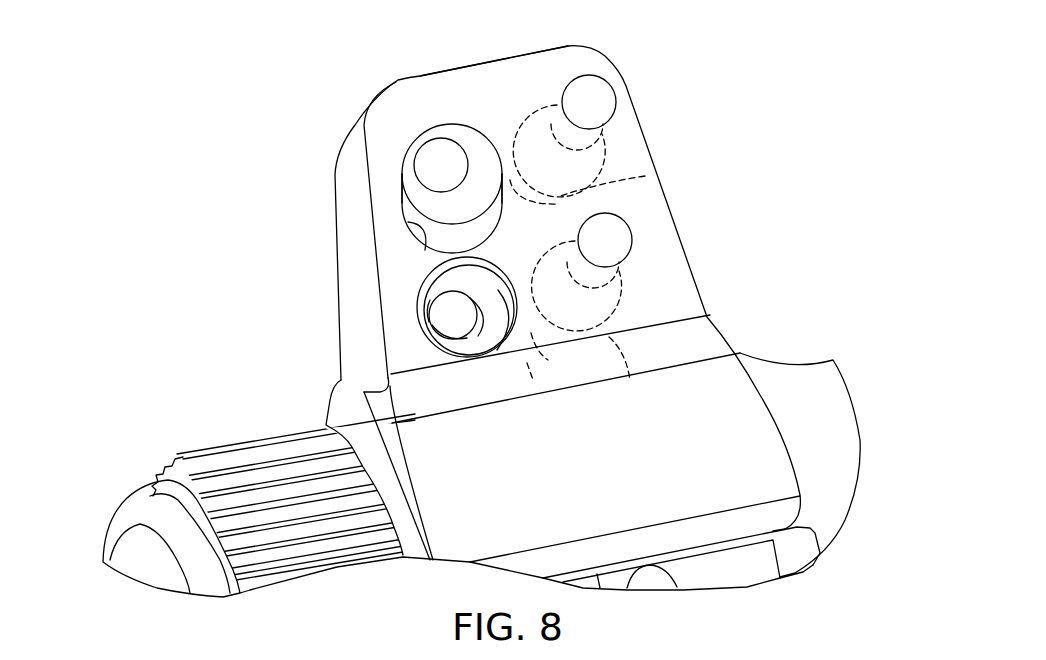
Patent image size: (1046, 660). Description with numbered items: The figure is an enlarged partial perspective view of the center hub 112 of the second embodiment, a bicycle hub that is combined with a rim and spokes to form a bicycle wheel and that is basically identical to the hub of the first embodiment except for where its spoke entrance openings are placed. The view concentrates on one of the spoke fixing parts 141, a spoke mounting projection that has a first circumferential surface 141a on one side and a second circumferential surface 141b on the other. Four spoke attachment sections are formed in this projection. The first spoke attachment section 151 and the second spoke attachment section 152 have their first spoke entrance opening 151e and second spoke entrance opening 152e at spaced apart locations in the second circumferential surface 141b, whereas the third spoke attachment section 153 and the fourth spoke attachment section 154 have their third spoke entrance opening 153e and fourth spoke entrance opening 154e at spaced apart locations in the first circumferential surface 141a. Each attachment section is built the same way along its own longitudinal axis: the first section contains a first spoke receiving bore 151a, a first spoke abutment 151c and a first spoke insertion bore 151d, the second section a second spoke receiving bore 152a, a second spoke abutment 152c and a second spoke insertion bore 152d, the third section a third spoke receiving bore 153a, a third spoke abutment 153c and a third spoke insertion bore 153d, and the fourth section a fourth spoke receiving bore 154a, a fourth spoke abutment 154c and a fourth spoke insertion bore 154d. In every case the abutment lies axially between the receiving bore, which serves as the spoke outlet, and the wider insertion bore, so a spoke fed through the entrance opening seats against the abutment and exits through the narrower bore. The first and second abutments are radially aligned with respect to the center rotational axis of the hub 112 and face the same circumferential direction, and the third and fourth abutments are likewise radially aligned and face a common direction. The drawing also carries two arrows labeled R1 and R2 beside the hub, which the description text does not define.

The center hub 112 is at (640, 33).
The spoke fixing part 141 is at (380, 77).
The first circumferential surface 141a is at (320, 193).
The second circumferential surface 141b is at (520, 88).
The first spoke attachment section 151 is at (407, 303).
The first spoke receiving bore 151a is at (483, 337).
The first spoke abutment 151c is at (420, 300).
The first spoke insertion bore 151d is at (505, 333).
The first spoke entrance opening 151e is at (468, 350).
The second spoke attachment section 152 is at (397, 217).
The second spoke receiving bore 152a is at (440, 157).
The second spoke abutment 152c is at (410, 190).
The second spoke insertion bore 152d is at (480, 220).
The second spoke entrance opening 152e is at (440, 250).
The third spoke attachment section 153 is at (650, 253).
The third spoke receiving bore 153a is at (613, 236).
The third spoke abutment 153c is at (600, 302).
The third spoke insertion bore 153d is at (629, 378).
The third spoke entrance opening 153e is at (548, 361).
The fourth spoke attachment section 154 is at (630, 112).
The fourth spoke receiving bore 154a is at (597, 97).
The fourth spoke abutment 154c is at (586, 160).
The fourth spoke insertion bore 154d is at (645, 176).
The fourth spoke entrance opening 154e is at (527, 118).
The first rotation direction R1 is at (120, 325).
The second rotation direction R2 is at (148, 337).